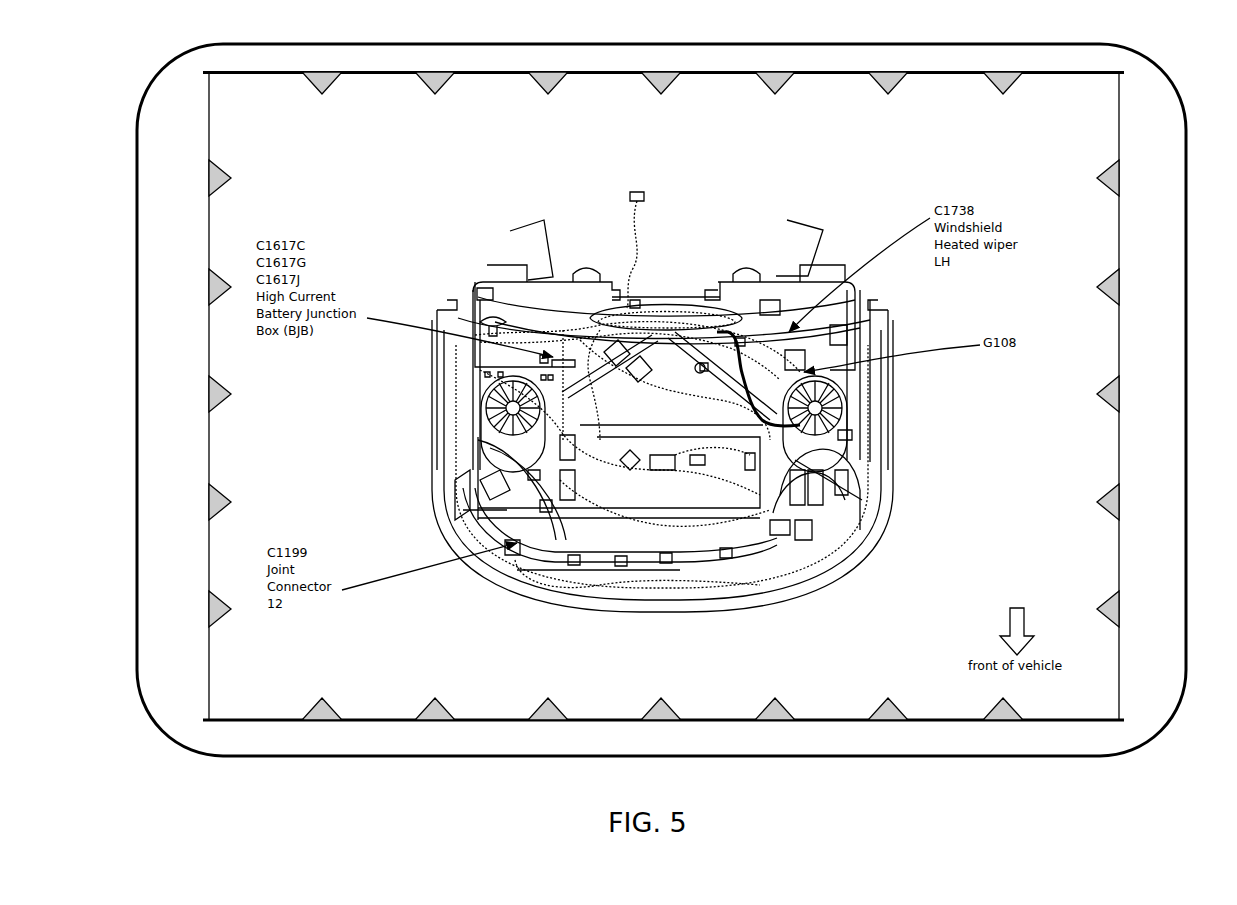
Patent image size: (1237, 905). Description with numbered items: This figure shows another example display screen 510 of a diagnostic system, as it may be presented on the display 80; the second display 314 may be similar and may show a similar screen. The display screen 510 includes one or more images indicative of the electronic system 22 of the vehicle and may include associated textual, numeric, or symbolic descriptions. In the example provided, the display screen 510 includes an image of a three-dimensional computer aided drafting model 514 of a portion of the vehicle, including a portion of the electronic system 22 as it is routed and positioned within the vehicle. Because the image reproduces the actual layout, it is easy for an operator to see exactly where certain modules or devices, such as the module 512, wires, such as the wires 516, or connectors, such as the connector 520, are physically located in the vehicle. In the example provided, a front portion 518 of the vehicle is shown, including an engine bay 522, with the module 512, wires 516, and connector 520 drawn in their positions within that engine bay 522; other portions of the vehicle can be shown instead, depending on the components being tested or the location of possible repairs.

The display 80 is at (213, 752).
The second display 314 is at (648, 420).
The display screen 510 is at (354, 728).
The module 512 is at (641, 190).
The 3-D computer aided drafting (CAD) model 514 is at (501, 260).
The wires 516 is at (624, 308).
The front portion 518 is at (759, 609).
The connector 520 is at (612, 330).
The engine bay 522 is at (729, 491).
The electronic system 22 is at (787, 436).